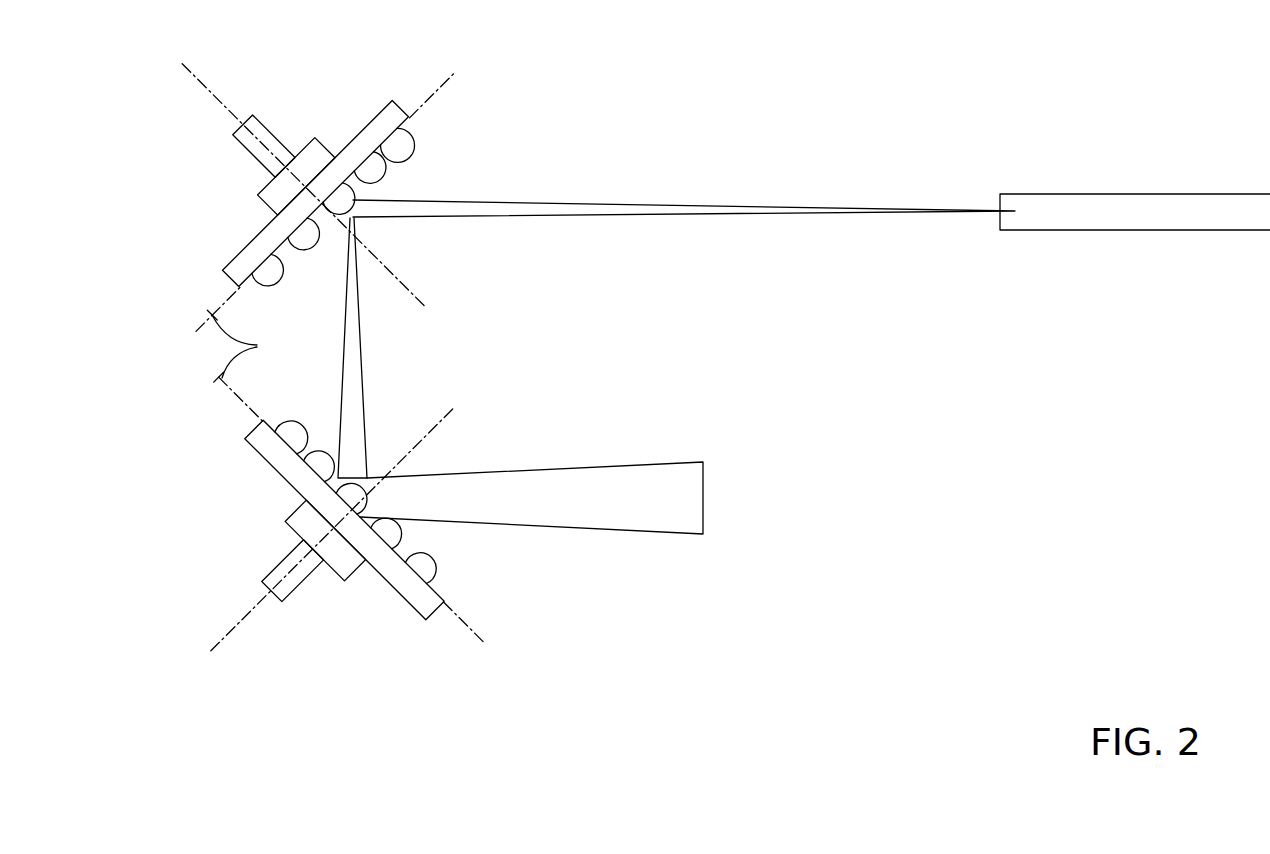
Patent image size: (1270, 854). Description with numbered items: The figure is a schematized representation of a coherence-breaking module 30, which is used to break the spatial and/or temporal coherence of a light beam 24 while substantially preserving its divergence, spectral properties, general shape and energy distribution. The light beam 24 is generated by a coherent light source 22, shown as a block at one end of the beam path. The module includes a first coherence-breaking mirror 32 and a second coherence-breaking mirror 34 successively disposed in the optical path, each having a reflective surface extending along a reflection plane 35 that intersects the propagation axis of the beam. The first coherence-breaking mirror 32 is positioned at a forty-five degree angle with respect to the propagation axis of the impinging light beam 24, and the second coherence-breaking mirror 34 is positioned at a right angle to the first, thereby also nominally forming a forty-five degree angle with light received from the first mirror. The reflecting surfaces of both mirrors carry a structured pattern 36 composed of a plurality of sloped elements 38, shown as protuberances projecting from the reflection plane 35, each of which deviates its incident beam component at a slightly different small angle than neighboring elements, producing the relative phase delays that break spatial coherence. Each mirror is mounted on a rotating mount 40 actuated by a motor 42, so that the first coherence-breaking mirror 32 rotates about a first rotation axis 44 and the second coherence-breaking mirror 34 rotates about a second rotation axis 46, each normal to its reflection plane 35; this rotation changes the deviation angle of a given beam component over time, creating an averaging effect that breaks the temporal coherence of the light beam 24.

The coherent light source 22 is at (1129, 192).
The light beam 24 is at (873, 208).
The coherence-breaking module 30 is at (562, 177).
The first coherence-breaking mirror 32 is at (397, 118).
The second coherence-breaking mirror 34 is at (420, 598).
The reflection plane 35 is at (251, 346).
The structured pattern 36 is at (399, 343).
The sloped element 38 is at (375, 167).
The rotating mount 40 is at (315, 140).
The motor 42 is at (257, 118).
The first rotation axis 44 is at (190, 73).
The second rotation axis 46 is at (222, 642).